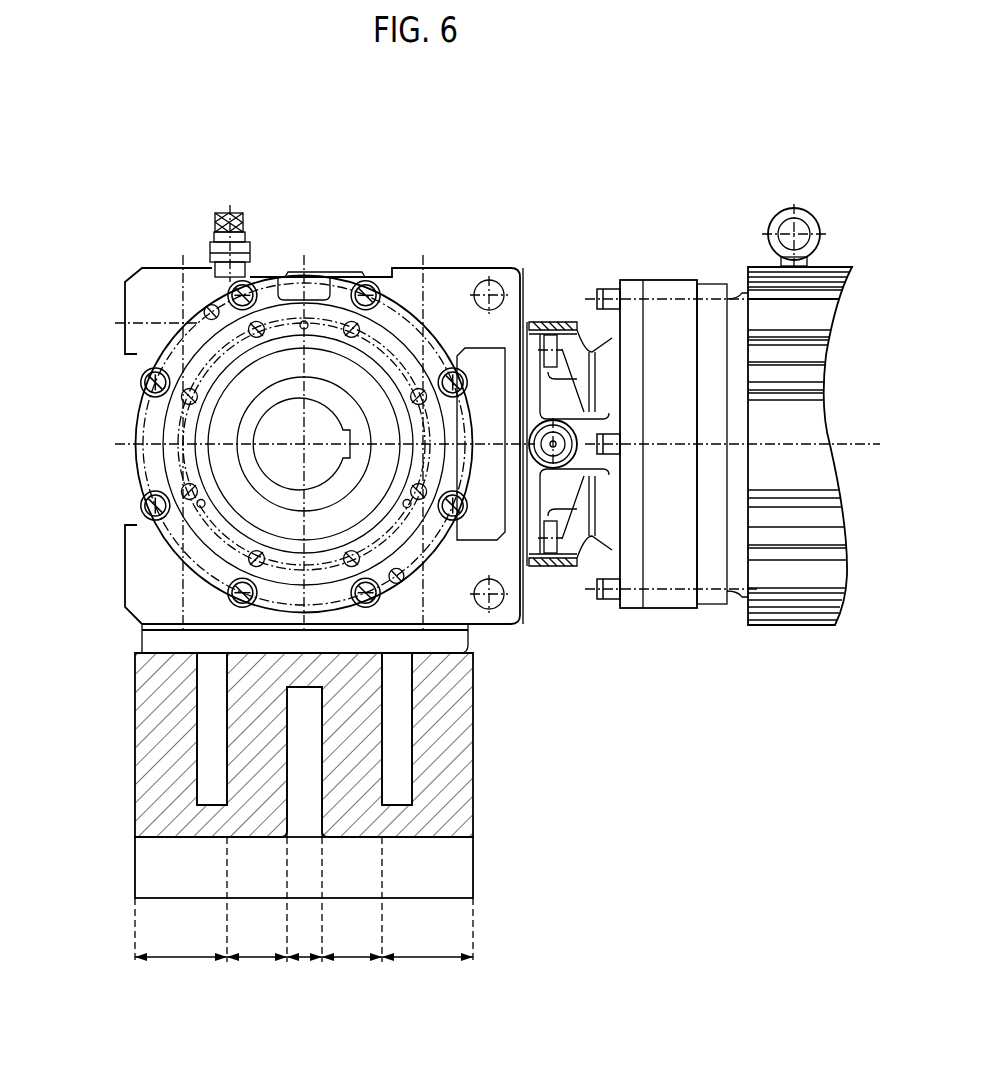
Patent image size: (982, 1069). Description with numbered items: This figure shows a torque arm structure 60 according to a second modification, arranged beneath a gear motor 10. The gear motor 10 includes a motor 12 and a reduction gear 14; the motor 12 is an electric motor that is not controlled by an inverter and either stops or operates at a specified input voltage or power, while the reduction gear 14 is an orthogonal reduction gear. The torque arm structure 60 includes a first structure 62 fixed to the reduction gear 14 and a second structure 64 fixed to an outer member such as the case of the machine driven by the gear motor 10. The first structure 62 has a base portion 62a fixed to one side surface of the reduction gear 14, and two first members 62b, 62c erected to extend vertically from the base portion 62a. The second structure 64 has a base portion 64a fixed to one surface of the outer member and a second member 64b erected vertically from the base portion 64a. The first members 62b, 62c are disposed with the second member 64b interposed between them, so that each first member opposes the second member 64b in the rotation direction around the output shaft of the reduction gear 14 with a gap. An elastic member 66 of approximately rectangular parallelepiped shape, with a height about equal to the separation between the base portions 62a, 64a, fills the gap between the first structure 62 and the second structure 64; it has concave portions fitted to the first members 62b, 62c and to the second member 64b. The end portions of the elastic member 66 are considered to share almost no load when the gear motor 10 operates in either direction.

The gear motor 10 is at (655, 199).
The motor 12 is at (748, 272).
The reduction gear 14 is at (463, 290).
The torque arm structure 60 is at (669, 632).
The first structure 62 is at (62, 622).
The base portion 62a is at (160, 643).
The first member 62b is at (212, 748).
The first member 62c is at (393, 722).
The second structure 64 is at (576, 825).
The base portion 64a is at (448, 882).
The second member 64b is at (307, 802).
The elastic member 66 is at (440, 808).